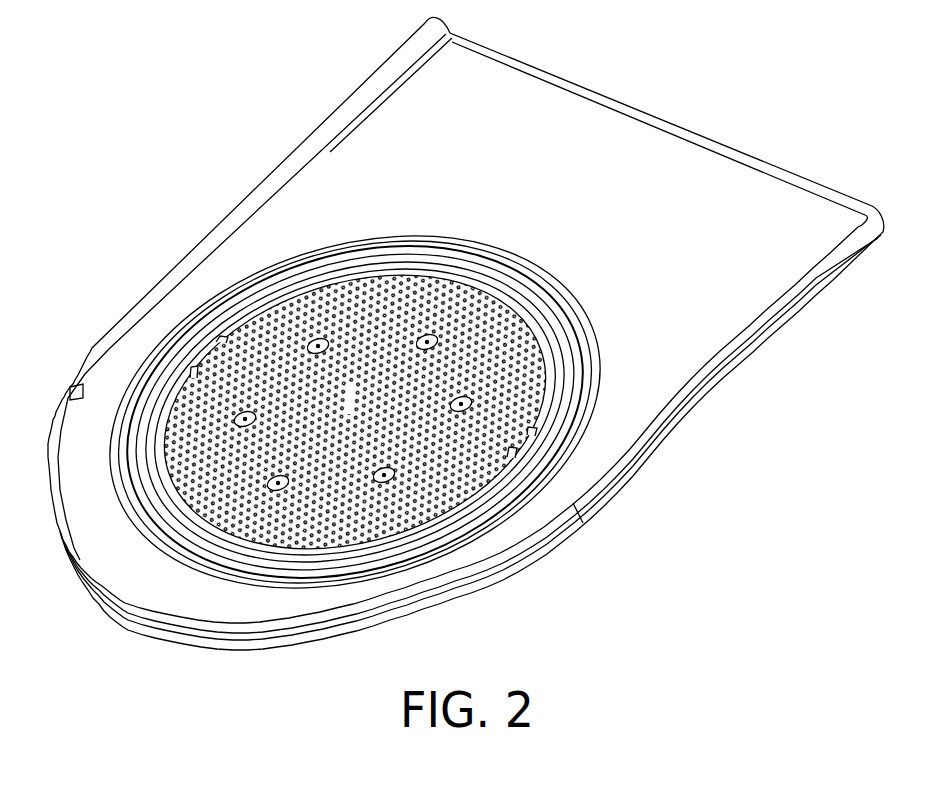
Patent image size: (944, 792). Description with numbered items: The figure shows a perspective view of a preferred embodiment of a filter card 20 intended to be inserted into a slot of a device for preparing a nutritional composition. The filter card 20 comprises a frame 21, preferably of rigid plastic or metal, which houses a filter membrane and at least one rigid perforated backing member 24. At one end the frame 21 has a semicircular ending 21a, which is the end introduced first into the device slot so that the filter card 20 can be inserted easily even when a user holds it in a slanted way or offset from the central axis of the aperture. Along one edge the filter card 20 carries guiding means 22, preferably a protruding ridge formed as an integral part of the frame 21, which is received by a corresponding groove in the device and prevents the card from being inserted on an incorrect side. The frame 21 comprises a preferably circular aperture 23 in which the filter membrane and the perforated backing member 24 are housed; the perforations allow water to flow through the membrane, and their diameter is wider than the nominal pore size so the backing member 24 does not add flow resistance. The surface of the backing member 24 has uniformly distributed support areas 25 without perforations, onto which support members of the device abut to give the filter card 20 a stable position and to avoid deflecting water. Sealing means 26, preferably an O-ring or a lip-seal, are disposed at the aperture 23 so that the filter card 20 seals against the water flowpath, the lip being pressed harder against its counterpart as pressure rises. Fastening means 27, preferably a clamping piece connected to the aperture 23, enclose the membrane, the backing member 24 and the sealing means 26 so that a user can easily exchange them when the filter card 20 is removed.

The filter card 20 is at (225, 178).
The frame 21 is at (779, 192).
The semicircular ending 21a is at (122, 618).
The guiding means 22 is at (393, 63).
The aperture 23 is at (293, 586).
The perforated backing member 24 is at (428, 500).
The support areas 25 is at (392, 468).
The sealing means 26 is at (233, 559).
The fastening means 27 is at (181, 378).